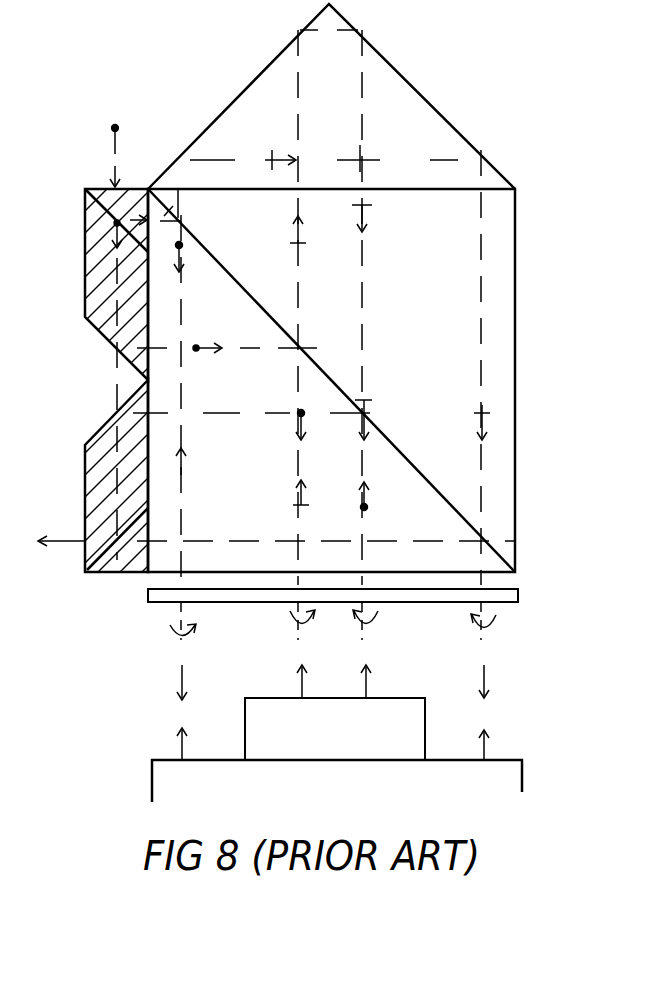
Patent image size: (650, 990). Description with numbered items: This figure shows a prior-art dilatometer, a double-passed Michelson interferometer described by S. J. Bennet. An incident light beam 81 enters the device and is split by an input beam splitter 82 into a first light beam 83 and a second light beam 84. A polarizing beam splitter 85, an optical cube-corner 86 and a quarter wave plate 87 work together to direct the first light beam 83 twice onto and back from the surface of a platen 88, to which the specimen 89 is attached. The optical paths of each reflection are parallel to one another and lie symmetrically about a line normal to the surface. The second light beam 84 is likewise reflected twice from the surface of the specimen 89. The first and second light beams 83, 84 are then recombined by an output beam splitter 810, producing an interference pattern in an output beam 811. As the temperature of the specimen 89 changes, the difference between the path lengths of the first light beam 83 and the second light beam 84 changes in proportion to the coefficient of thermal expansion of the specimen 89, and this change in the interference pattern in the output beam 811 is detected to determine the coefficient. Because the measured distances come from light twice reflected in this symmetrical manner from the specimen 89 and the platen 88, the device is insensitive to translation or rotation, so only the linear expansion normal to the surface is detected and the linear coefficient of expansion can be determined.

The incident light beam 81 is at (127, 121).
The input beam splitter 82 is at (102, 240).
The first light beam 83 is at (174, 212).
The second light beam 84 is at (118, 285).
The polarizing beam splitter 85 is at (378, 422).
The optical cube-corner 86 is at (433, 100).
The quarter wave plate 87 is at (517, 604).
The platen 88 is at (522, 778).
The specimen 89 is at (420, 721).
The output beam splitter 810 is at (105, 529).
The output beam 811 is at (75, 547).